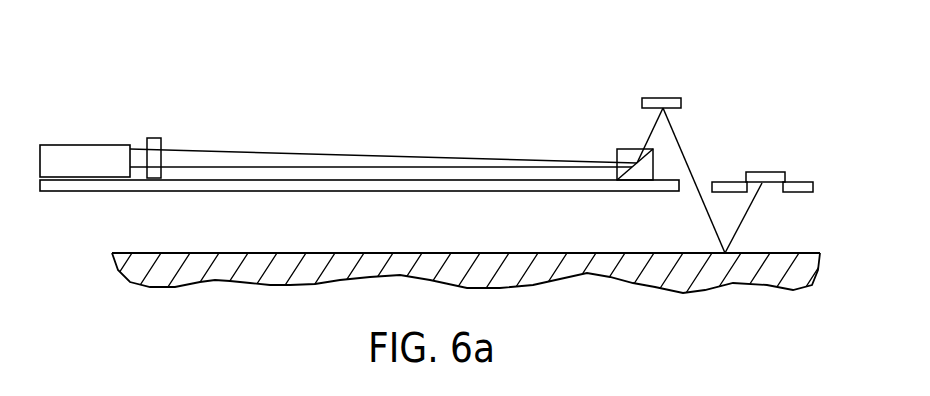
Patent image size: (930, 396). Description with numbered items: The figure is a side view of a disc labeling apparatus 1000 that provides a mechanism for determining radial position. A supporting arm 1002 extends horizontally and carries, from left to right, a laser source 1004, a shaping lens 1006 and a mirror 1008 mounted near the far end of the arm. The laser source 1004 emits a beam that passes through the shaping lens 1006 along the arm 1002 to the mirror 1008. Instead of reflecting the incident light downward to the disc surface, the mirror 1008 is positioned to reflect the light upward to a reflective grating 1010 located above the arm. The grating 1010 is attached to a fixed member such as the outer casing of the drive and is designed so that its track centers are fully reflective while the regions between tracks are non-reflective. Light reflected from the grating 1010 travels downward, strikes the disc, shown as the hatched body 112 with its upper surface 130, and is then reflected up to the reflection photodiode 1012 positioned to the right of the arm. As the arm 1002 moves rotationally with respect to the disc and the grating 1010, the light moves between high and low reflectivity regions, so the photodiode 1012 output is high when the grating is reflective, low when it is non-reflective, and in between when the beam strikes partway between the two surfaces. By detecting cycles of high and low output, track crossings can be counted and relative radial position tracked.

The disc labeling apparatus 1000 is at (287, 58).
The supporting arm 1002 is at (73, 192).
The laser source 1004 is at (82, 138).
The shaping lens 1006 is at (160, 130).
The mirror 1008 is at (631, 182).
The reflective grating 1010 is at (668, 85).
The reflection photodiode 1012 is at (776, 167).
The surface 130 is at (455, 252).
The substrate / ground material 112 is at (507, 268).